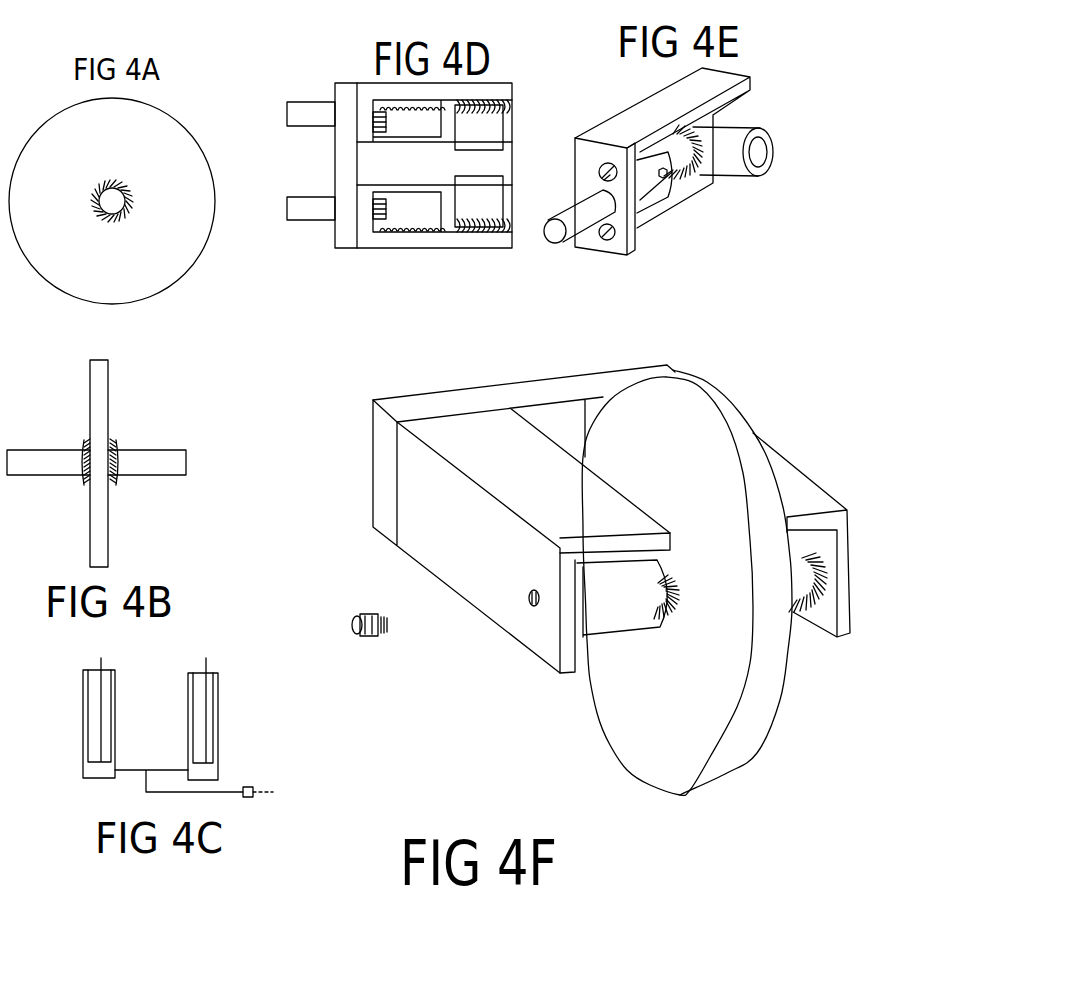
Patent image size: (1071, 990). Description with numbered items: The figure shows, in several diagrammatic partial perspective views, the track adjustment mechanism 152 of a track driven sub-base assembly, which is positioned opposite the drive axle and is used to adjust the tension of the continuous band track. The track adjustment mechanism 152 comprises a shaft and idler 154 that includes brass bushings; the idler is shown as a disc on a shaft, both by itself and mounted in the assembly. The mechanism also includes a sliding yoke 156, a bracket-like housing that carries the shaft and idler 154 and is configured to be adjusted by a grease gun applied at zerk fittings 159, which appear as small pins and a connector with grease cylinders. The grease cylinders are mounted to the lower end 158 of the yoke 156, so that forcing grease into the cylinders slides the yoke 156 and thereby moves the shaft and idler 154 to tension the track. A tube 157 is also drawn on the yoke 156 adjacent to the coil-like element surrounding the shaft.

In FIG. 4F, the drive assembly 152 is at (400, 344).
In FIG. 4A, the disc 154 is at (198, 140).
In FIG. 4B, the disc 154 is at (108, 360).
In FIG. 4F, the disc 154 is at (728, 395).
In FIG. 4D, the bracket housing 156 is at (513, 83).
In FIG. 4E, the bracket housing 156 is at (747, 73).
In FIG. 4F, the bracket housing 156 is at (788, 457).
In FIG. 4E, the tube 157 is at (660, 193).
In FIG. 4F, the solenoid housing block 158 is at (528, 650).
In FIG. 4C, the pin connector 159 is at (273, 792).
In FIG. 4E, the pin connector 159 is at (545, 242).